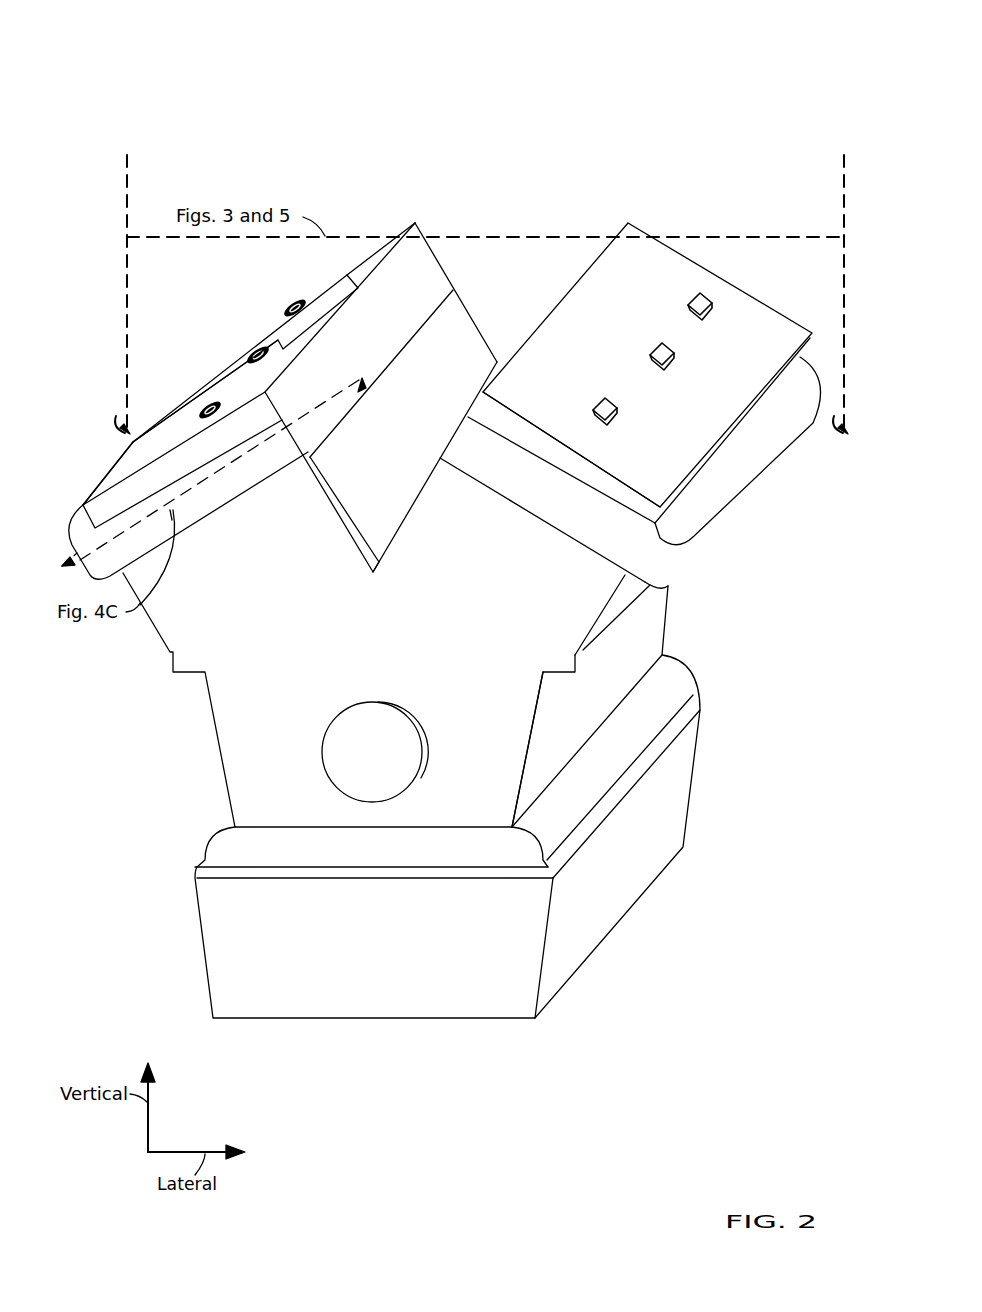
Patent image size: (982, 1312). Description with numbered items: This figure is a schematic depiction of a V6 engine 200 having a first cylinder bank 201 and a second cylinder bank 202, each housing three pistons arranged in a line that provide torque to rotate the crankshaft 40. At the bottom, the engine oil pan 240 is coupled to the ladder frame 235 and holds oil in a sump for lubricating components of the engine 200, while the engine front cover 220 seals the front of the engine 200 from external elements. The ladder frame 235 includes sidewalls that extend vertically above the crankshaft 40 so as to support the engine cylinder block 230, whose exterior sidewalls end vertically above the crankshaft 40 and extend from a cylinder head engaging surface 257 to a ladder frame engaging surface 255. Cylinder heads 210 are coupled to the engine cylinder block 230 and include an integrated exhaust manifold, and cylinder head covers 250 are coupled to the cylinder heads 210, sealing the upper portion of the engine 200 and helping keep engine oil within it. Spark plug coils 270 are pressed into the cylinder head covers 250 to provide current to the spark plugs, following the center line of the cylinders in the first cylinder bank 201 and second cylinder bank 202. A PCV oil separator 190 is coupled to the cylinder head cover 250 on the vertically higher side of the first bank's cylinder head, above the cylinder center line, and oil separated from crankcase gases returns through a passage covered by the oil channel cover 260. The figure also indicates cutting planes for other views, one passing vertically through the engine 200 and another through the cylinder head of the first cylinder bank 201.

The engine 200 is at (750, 42).
The first cylinder bank 201 is at (415, 188).
The second cylinder bank 202 is at (608, 203).
The PCV oil separator 190 is at (347, 275).
The spark plug coils 270 is at (296, 305).
The oil channel cover 260 is at (232, 378).
The cylinder head covers 250 is at (148, 480).
The cylinder heads 210 is at (545, 541).
The cylinder head engaging surface 257 is at (378, 383).
The engine cylinder block 230 is at (381, 467).
The engine front cover 220 is at (213, 717).
The crankshaft 40 is at (332, 770).
The ladder frame engaging surface 255 is at (598, 633).
The ladder frame 235 is at (554, 749).
The engine oil pan 240 is at (218, 1020).